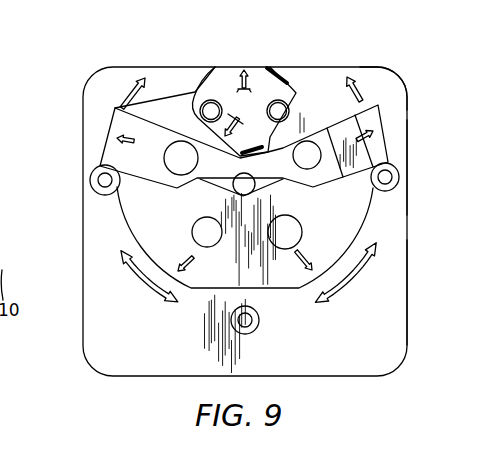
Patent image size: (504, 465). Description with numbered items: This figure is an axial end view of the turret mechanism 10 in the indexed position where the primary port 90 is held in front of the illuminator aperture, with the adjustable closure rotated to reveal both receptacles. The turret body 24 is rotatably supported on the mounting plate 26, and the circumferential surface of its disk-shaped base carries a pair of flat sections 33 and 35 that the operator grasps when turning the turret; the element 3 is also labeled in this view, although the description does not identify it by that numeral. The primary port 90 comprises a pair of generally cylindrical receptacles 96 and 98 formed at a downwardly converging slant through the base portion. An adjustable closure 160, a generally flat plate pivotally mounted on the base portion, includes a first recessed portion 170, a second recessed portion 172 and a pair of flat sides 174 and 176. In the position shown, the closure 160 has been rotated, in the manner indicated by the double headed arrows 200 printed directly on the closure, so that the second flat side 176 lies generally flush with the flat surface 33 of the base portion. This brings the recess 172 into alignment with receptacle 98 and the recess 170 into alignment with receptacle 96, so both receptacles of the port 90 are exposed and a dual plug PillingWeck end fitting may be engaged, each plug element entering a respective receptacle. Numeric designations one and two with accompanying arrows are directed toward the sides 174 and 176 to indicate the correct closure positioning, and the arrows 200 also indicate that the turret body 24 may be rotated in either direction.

The turret mechanism 10 is at (70, 195).
The mounting plate 26 is at (409, 280).
The housing wall 3 is at (408, 170).
The flat section 33 is at (369, 63).
The turret body 24 is at (137, 242).
The flat section 35 is at (197, 287).
The double headed arrows 200 is at (349, 279).
The primary port 90 is at (307, 97).
The adjustable closure 160 is at (217, 72).
The first recessed portion 170 is at (285, 94).
The second recessed portion 172 is at (194, 90).
The flat side 174 is at (143, 80).
The flat side 176 is at (235, 66).
The receptacle 98 is at (201, 113).
The receptacle 96 is at (288, 113).